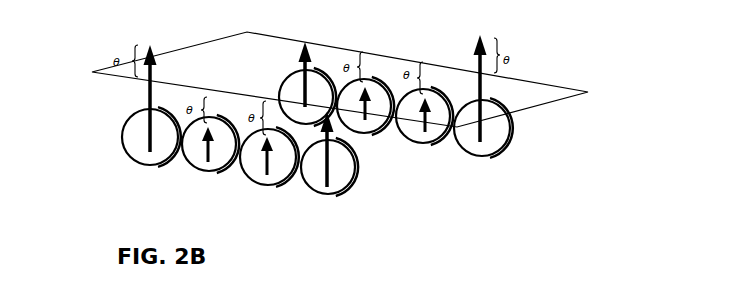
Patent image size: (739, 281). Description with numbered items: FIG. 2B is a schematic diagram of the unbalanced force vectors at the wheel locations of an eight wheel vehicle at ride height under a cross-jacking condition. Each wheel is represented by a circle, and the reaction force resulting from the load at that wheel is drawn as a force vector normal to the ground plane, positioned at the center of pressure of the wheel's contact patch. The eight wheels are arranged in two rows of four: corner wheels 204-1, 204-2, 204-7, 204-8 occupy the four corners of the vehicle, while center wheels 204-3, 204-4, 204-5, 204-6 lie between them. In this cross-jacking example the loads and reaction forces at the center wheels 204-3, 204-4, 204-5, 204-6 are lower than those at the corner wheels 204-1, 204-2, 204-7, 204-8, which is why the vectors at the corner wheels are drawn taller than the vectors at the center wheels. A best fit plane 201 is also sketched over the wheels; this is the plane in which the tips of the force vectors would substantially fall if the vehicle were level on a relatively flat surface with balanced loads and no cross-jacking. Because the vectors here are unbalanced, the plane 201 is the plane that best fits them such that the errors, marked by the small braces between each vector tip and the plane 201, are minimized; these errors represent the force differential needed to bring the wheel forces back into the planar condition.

The best fit plane 201 is at (227, 45).
The corner wheel 204-1 is at (497, 111).
The corner wheel 204-2 is at (311, 168).
The center wheel 204-3 is at (427, 133).
The center wheel 204-4 is at (250, 170).
The center wheel 204-5 is at (370, 126).
The center wheel 204-6 is at (188, 154).
The corner wheel 204-7 is at (281, 84).
The corner wheel 204-8 is at (130, 109).